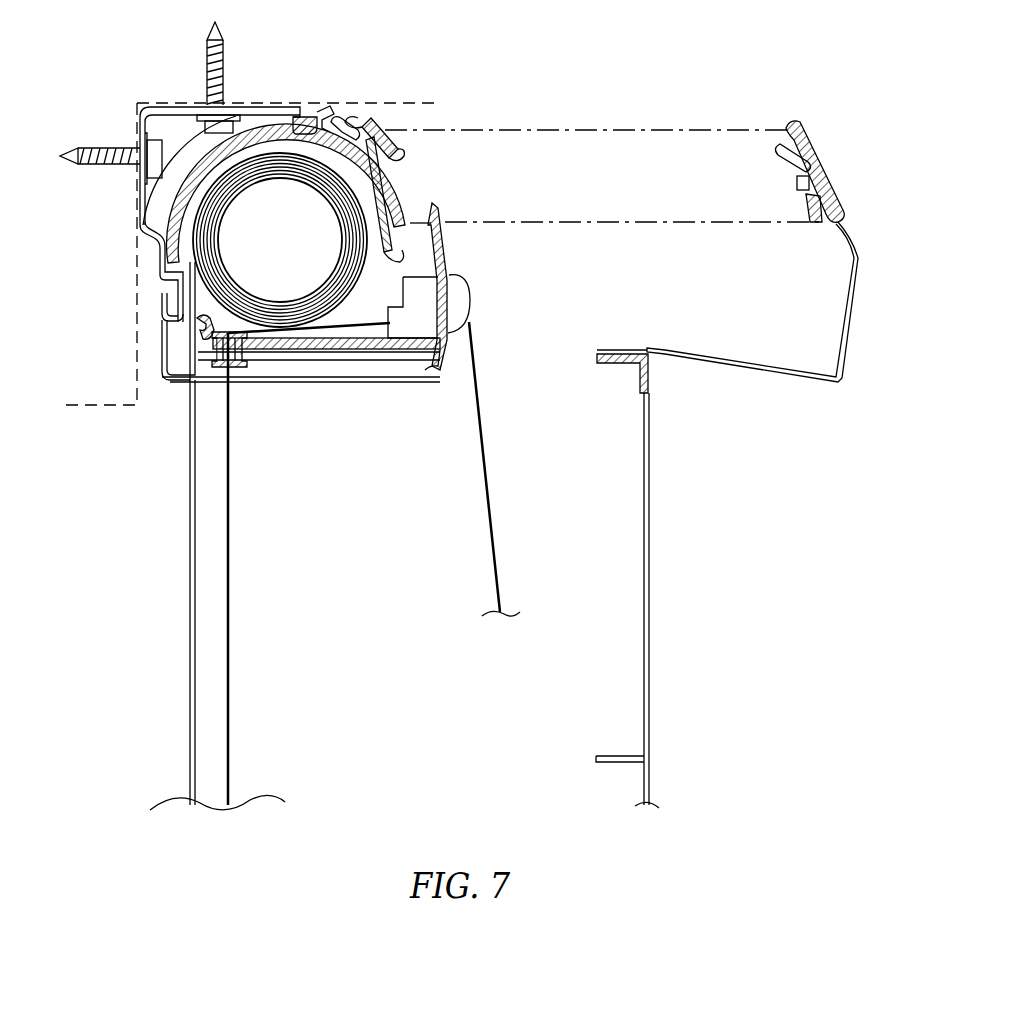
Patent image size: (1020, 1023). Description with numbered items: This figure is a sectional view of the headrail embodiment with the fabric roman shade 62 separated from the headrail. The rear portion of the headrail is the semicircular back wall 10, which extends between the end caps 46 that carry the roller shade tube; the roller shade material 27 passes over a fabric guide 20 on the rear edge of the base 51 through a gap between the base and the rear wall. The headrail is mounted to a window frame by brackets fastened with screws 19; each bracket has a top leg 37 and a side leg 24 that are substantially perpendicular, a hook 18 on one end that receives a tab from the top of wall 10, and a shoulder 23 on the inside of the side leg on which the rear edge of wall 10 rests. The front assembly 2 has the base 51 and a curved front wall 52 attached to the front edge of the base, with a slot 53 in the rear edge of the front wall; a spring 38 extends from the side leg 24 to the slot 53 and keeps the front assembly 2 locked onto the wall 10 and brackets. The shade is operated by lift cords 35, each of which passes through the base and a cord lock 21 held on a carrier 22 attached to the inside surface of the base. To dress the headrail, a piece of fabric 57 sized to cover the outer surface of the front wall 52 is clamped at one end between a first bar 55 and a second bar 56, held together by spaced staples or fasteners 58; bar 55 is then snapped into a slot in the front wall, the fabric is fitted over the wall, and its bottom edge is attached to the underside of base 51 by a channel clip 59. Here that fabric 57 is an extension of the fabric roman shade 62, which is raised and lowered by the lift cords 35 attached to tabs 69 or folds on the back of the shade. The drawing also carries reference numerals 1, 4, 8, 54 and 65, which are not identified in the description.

The roller blind assembly 1 is at (136, 90).
The front assembly 2 is at (486, 268).
The clip hook 4 is at (166, 318).
The blind roll 8 is at (289, 251).
The semicircular back wall 10 is at (178, 214).
The hook 18 is at (327, 110).
The screws 19 is at (98, 150).
The fabric guide 20 is at (200, 344).
The cord lock 21 is at (470, 296).
The carrier 22 is at (412, 330).
The shoulder 23 is at (162, 268).
The side leg 24 is at (178, 280).
The roller shade material 27 is at (189, 506).
The lift cords 35 is at (228, 621).
The top leg 37 is at (246, 104).
The spring 38 is at (340, 122).
The end caps 46 is at (356, 376).
The base 51 is at (297, 350).
The curved front wall 52 is at (446, 250).
The slot 53 is at (376, 126).
The clip 54 is at (298, 126).
The first bar 55 is at (778, 166).
The second bar 56 is at (812, 154).
The fabric 57 is at (850, 352).
The staples or fasteners 58 is at (802, 186).
The channel clip 59 is at (624, 357).
The fabric roman shade 62 is at (650, 582).
The clip 65 is at (224, 364).
The tabs 69 is at (606, 756).